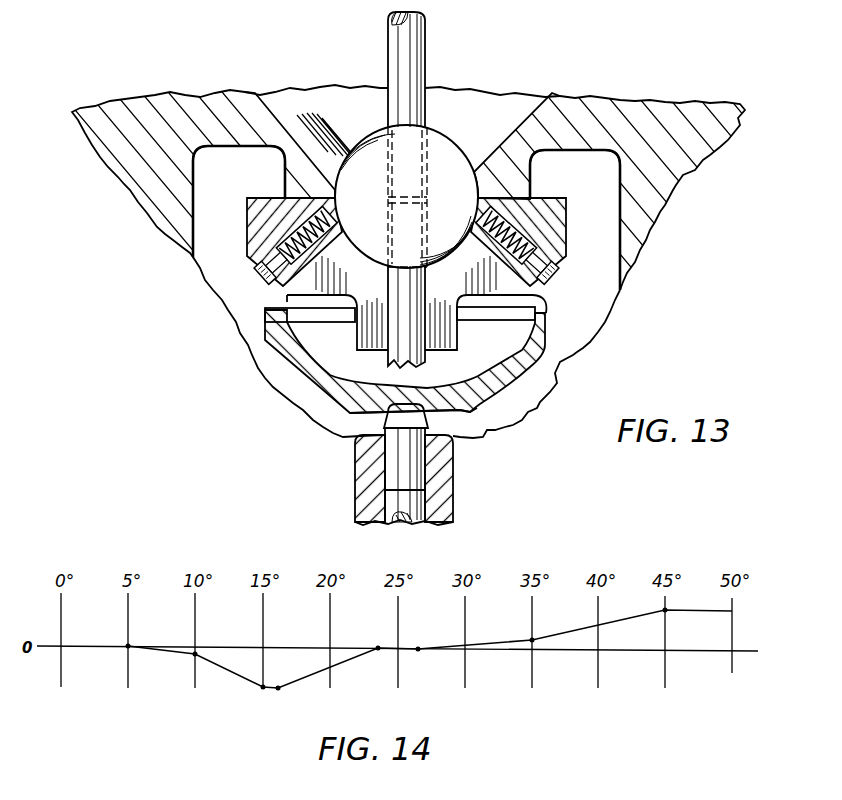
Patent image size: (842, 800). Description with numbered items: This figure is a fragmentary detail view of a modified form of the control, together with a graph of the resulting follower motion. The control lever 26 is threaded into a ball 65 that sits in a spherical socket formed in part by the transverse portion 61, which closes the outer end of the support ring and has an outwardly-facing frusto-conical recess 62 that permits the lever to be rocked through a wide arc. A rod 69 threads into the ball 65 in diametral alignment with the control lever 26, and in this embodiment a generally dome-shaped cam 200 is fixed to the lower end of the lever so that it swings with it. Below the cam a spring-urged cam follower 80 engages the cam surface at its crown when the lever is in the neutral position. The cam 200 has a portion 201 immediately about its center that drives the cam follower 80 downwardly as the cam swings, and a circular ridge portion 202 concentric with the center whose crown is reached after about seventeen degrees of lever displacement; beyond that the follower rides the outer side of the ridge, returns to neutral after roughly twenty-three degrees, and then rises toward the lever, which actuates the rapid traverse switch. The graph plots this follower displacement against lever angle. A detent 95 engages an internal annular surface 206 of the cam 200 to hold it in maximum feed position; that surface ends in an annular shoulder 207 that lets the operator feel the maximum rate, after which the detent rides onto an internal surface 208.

The control lever 26 is at (415, 38).
The frusto-conically shaped recess 62 is at (452, 100).
The ball 65 is at (443, 152).
The transverse portion 61 is at (672, 182).
The detent 95 is at (562, 298).
The annular shoulder 207 is at (290, 304).
The internal annular surface 206 is at (535, 303).
The internal surface 208 is at (343, 340).
The rod 69 is at (420, 333).
The dome-shaped cam 200 is at (572, 352).
The circular ridge portion 202 is at (477, 413).
The portion about the center 201 is at (432, 412).
The cam follower 80 is at (410, 473).